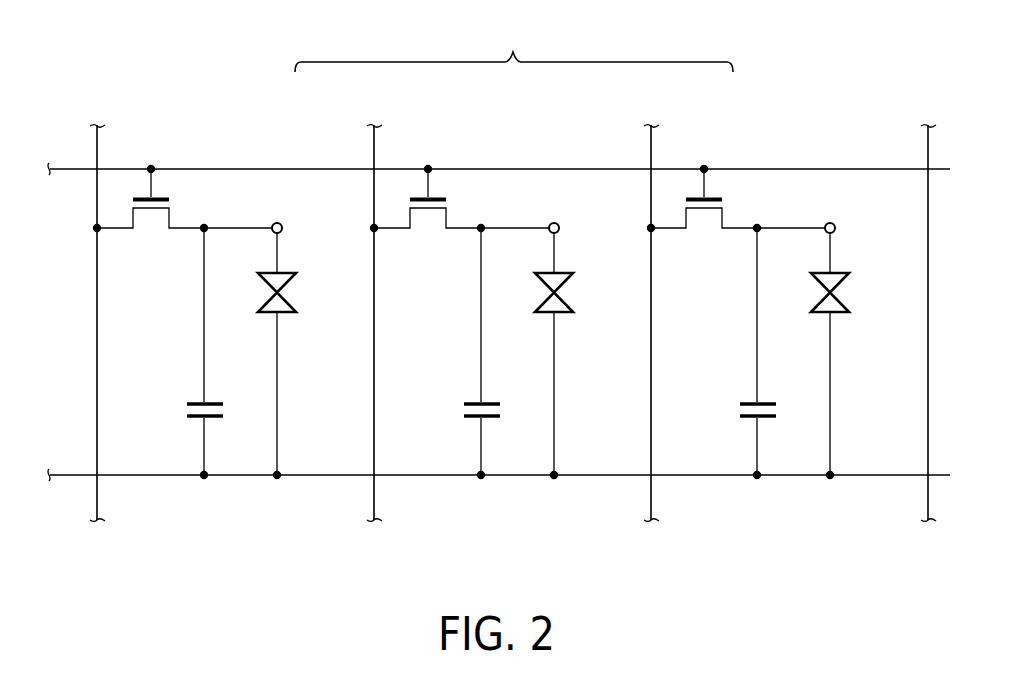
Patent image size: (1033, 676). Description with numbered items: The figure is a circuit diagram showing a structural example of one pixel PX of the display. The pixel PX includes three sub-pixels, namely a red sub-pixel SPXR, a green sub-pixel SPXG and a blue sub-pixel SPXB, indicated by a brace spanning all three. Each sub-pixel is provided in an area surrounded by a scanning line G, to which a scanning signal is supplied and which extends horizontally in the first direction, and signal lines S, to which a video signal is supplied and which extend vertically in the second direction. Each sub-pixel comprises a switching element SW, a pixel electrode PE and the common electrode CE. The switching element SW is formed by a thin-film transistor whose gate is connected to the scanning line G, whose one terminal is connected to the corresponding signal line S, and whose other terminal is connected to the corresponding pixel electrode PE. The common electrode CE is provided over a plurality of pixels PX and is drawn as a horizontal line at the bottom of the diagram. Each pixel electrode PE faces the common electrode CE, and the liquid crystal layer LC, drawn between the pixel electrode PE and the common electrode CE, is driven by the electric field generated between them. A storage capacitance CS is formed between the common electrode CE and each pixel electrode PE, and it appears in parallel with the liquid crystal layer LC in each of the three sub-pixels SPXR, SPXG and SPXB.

The scanning line G is at (73, 168).
The signal line S is at (97, 307).
The common electrode CE is at (313, 477).
The switching element SW is at (181, 219).
The pixel electrode PE is at (283, 228).
The liquid crystal layer LC is at (297, 294).
The storage capacitance CS is at (184, 405).
The pixel PX is at (514, 48).
The red sub-pixel SPXR is at (301, 147).
The green sub-pixel SPXG is at (488, 150).
The blue sub-pixel SPXB is at (722, 148).